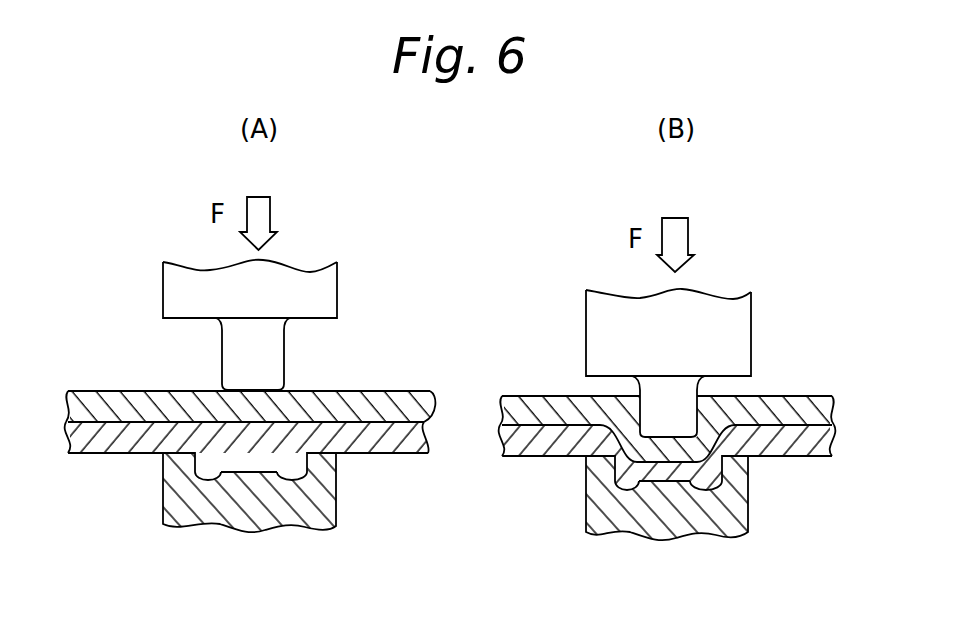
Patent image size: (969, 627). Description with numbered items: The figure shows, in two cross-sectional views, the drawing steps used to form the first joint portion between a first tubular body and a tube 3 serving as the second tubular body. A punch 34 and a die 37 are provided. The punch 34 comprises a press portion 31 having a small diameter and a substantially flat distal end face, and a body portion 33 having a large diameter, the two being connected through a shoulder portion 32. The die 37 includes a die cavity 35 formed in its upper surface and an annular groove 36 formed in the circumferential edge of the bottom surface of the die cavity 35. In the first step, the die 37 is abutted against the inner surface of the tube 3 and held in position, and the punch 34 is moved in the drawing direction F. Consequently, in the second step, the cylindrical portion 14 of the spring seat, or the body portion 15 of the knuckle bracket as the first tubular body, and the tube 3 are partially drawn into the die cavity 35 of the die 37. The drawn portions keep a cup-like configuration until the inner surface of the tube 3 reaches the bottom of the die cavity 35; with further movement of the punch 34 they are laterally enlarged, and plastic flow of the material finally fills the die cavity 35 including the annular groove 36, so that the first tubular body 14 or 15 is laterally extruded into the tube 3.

The tube 3 is at (140, 445).
The cylindrical portion 14 is at (443, 396).
The body portion 15 is at (117, 400).
The press portion 31 is at (283, 368).
The shoulder portion 32 is at (414, 343).
The body portion 33 is at (461, 275).
The punch 34 is at (293, 262).
The die cavity 35 is at (262, 464).
The annular groove 36 is at (208, 474).
The die 37 is at (430, 528).